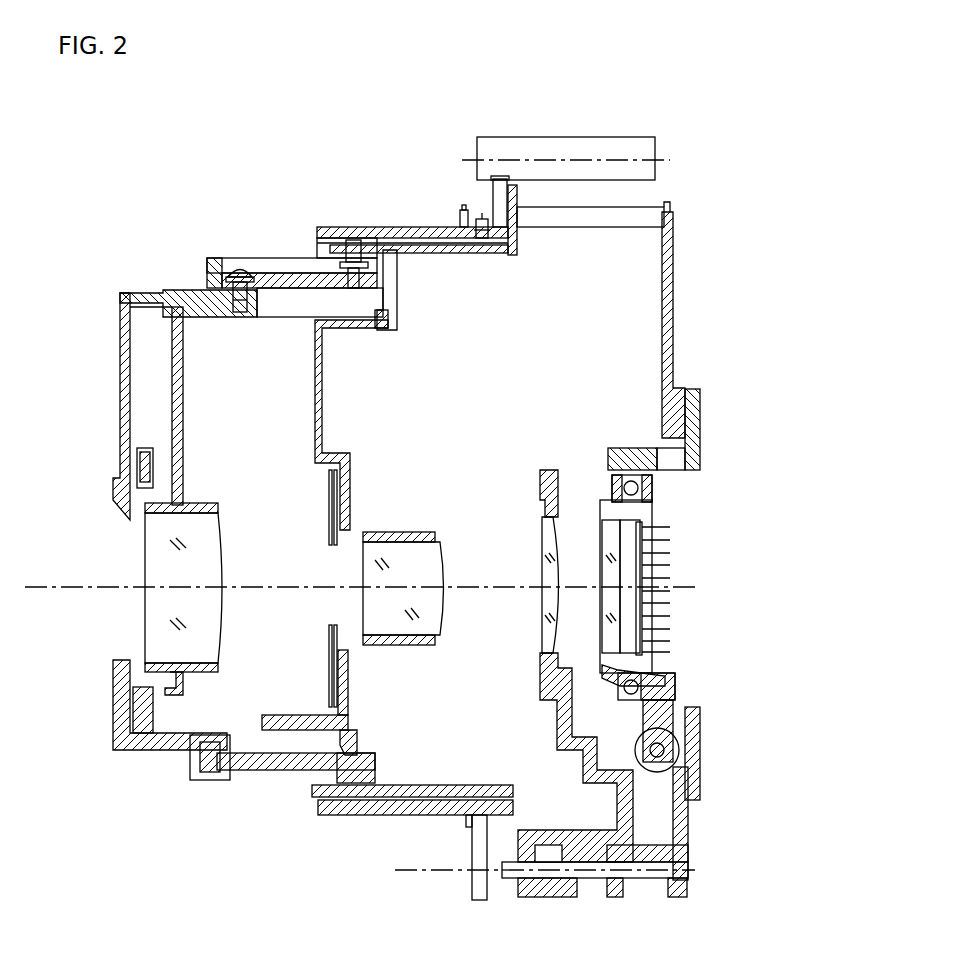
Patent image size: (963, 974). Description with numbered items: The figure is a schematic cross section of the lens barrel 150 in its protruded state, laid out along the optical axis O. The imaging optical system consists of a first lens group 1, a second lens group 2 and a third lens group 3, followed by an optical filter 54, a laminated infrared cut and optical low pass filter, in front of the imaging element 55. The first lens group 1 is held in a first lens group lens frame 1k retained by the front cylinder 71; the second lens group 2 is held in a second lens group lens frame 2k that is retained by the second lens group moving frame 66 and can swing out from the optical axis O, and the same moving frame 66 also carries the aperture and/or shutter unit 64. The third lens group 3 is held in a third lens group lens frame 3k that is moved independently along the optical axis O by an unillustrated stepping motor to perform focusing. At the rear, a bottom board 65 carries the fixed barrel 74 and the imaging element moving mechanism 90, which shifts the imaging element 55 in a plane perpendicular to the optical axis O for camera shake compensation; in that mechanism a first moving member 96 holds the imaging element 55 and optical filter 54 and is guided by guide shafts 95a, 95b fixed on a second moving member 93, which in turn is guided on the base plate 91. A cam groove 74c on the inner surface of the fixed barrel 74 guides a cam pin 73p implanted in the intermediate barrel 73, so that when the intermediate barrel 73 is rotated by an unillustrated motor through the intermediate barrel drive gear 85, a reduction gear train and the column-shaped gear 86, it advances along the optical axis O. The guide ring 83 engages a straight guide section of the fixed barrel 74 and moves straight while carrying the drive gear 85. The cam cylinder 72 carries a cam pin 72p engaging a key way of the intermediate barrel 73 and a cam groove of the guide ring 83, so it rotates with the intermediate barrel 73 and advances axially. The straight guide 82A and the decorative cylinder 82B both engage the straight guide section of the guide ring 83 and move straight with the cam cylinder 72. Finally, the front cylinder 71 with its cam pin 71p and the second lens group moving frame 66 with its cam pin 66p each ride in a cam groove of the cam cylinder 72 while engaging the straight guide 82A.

The optical axis O is at (44, 587).
The lens barrel 150 is at (262, 165).
The first lens group 1 is at (145, 604).
The first lens group lens frame 1k is at (184, 465).
The second lens group 2 is at (440, 560).
The second lens group lens frame 2k is at (397, 532).
The third lens group 3 is at (542, 630).
The third lens group lens frame 3k is at (548, 712).
The optical filter 54 is at (604, 574).
The imaging element 55 is at (648, 574).
The aperture and/or shutter unit 64 is at (328, 655).
The bottom board 65 is at (674, 310).
The second lens group moving frame 66 is at (350, 465).
The cam pin 66p is at (358, 745).
The front cylinder 71 is at (175, 292).
The cam pin 71p is at (238, 275).
The cam cylinder 72 is at (262, 272).
The cam pin 72p is at (352, 240).
The intermediate barrel 73 is at (396, 226).
The cam pin 73p is at (478, 240).
The fixed barrel 74 is at (640, 208).
The cam groove 74c is at (466, 205).
The straight guide 82A is at (397, 288).
The decorative cylinder 82B is at (292, 262).
The guide ring 83 is at (502, 254).
The intermediate barrel drive gear 85 is at (500, 178).
The column-shaped gear 86 is at (575, 152).
The imaging element moving mechanism 90 is at (742, 472).
The base plate 91 is at (700, 400).
The second moving member 93 is at (624, 455).
The guide shaft 95a is at (652, 490).
The guide shaft 95b is at (655, 690).
The first moving member 96 is at (662, 676).